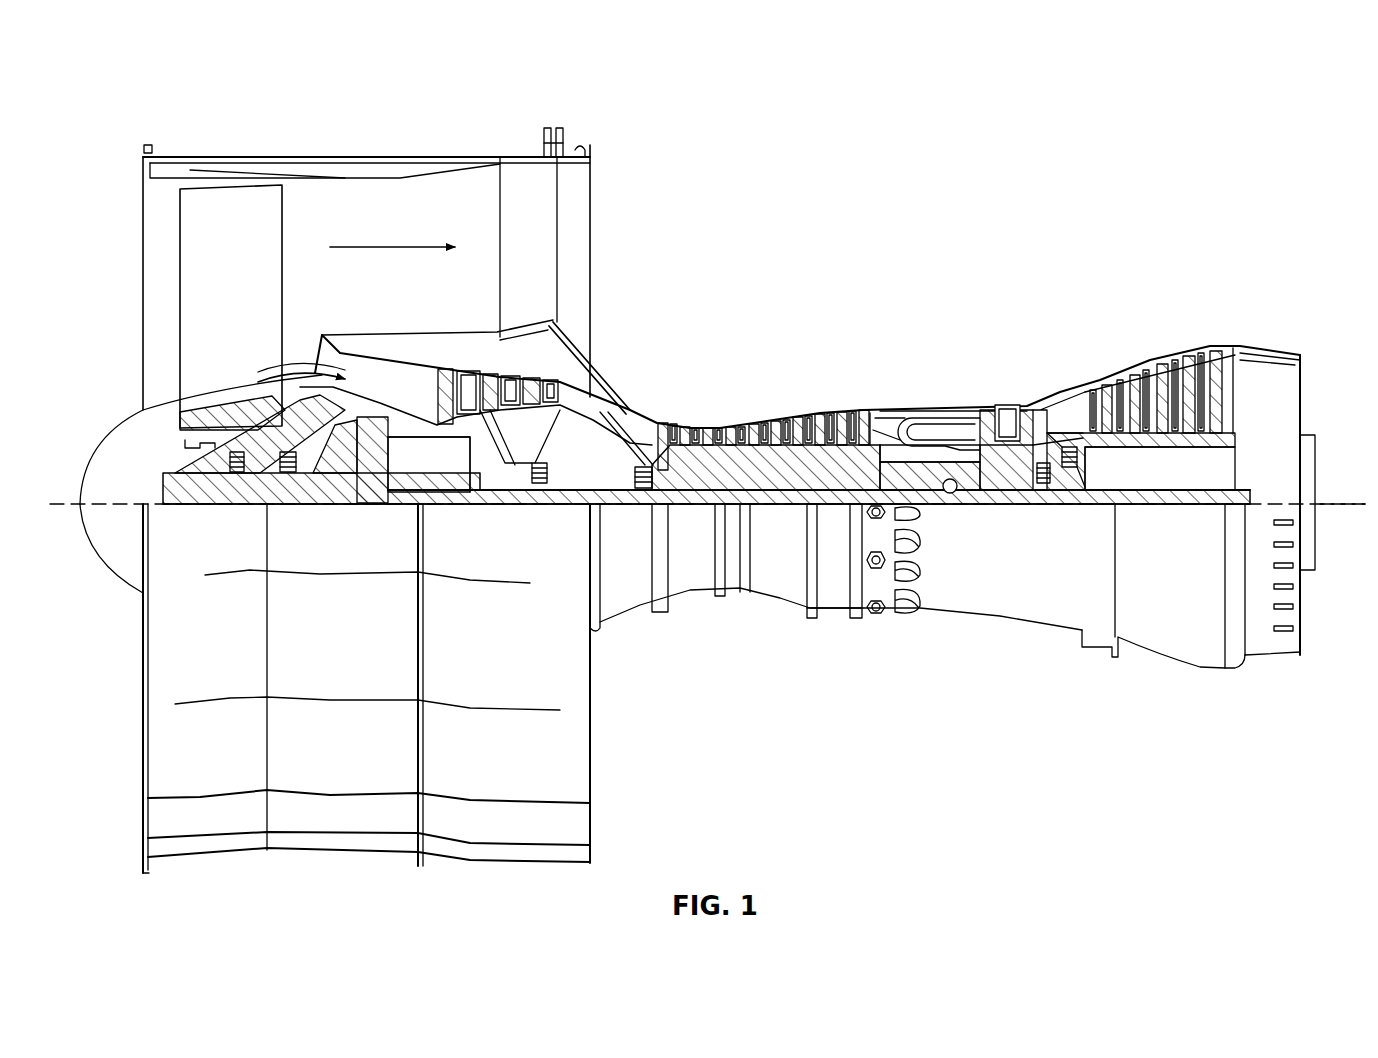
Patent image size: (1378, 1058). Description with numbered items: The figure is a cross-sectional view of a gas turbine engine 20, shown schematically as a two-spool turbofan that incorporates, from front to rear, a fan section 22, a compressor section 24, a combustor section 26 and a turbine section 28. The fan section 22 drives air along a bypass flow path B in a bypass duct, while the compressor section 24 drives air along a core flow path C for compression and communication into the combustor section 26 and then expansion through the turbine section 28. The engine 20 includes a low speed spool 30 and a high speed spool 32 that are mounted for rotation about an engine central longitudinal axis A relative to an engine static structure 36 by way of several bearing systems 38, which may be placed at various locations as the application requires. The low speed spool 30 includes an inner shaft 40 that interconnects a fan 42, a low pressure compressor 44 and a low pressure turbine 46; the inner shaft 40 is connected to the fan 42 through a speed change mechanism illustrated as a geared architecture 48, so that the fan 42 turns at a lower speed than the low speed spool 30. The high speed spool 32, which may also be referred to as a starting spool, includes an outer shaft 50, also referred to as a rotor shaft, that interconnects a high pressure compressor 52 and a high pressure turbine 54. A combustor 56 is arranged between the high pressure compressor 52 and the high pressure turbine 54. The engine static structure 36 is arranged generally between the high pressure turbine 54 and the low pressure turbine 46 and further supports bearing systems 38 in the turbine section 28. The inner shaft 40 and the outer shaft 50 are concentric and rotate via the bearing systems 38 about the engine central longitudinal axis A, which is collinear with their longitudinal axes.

The gas turbine engine 20 is at (1183, 165).
The fan section 22 is at (248, 150).
The compressor section 24 is at (757, 322).
The combustor section 26 is at (943, 302).
The turbine section 28 is at (1087, 297).
The low speed spool 30 is at (797, 510).
The high speed spool 32 is at (864, 452).
The engine static structure 36 is at (838, 616).
The bearing systems 38 is at (238, 472).
The inner shaft 40 is at (612, 505).
The fan 42 is at (214, 296).
The low pressure compressor 44 is at (510, 382).
The low pressure turbine 46 is at (1162, 372).
The geared architecture 48 is at (375, 490).
The outer shaft 50 is at (952, 493).
The high pressure compressor 52 is at (750, 470).
The high pressure turbine 54 is at (1008, 405).
The combustor 56 is at (930, 425).
The engine central longitudinal axis A is at (1333, 498).
The bypass flow path B is at (392, 247).
The core flow path C is at (260, 378).